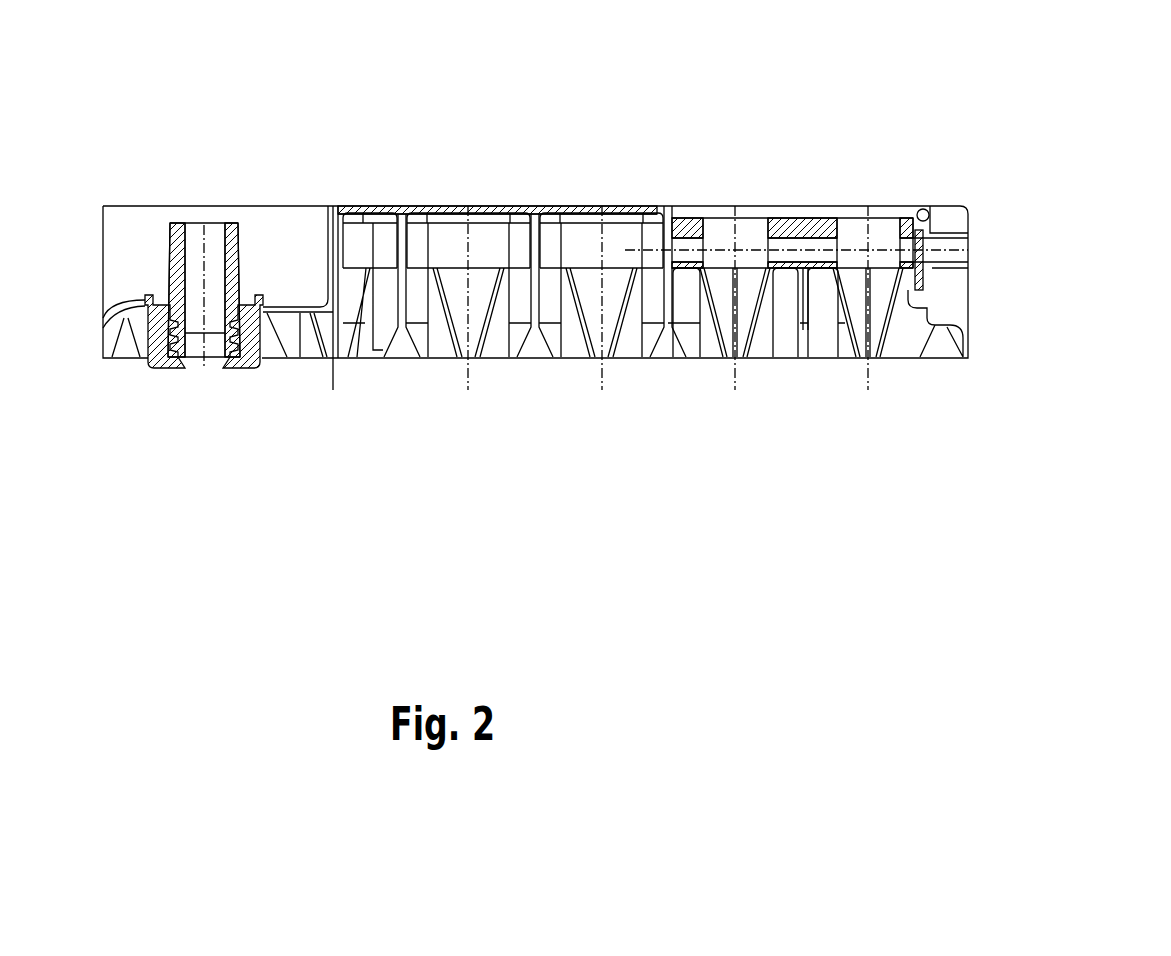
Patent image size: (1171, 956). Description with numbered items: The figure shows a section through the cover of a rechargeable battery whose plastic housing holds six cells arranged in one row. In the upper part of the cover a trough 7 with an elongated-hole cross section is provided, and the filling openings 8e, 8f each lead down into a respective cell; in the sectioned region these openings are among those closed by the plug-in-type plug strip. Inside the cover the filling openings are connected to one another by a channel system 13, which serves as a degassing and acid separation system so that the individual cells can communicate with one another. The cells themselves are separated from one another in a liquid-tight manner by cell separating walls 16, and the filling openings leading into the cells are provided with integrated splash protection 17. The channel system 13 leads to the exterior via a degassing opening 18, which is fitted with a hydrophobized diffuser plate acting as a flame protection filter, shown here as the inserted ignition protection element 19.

The trough 7 is at (900, 215).
The filling opening 8e is at (716, 232).
The filling opening 8f is at (853, 236).
The channel system 13 is at (813, 250).
The cell separating wall 16 is at (533, 330).
The splash protection 17 is at (725, 297).
The degassing opening 18 is at (970, 248).
The ignition protection element 19 is at (918, 290).